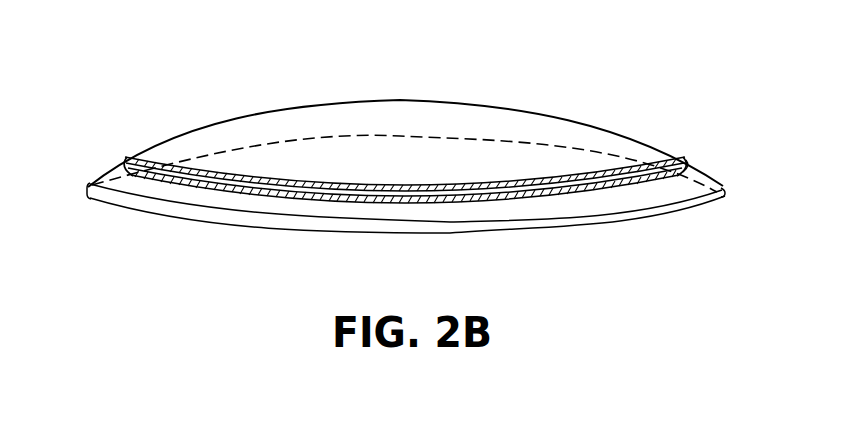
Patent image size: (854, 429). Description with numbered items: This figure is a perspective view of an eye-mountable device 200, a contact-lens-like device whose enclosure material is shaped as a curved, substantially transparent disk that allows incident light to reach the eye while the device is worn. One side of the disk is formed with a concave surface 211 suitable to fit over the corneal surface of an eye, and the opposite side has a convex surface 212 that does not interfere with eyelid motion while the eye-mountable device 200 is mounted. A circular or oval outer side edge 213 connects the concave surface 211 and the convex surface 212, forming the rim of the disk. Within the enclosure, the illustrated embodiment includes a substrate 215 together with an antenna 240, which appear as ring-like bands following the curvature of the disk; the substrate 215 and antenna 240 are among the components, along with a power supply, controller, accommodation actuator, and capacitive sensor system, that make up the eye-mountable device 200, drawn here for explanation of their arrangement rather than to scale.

The eye-mountable device 200 is at (178, 94).
The concave surface 211 is at (657, 199).
The convex surface 212 is at (640, 136).
The outer side edge 213 is at (515, 223).
The substrate 215 is at (128, 160).
The antenna 240 is at (677, 160).